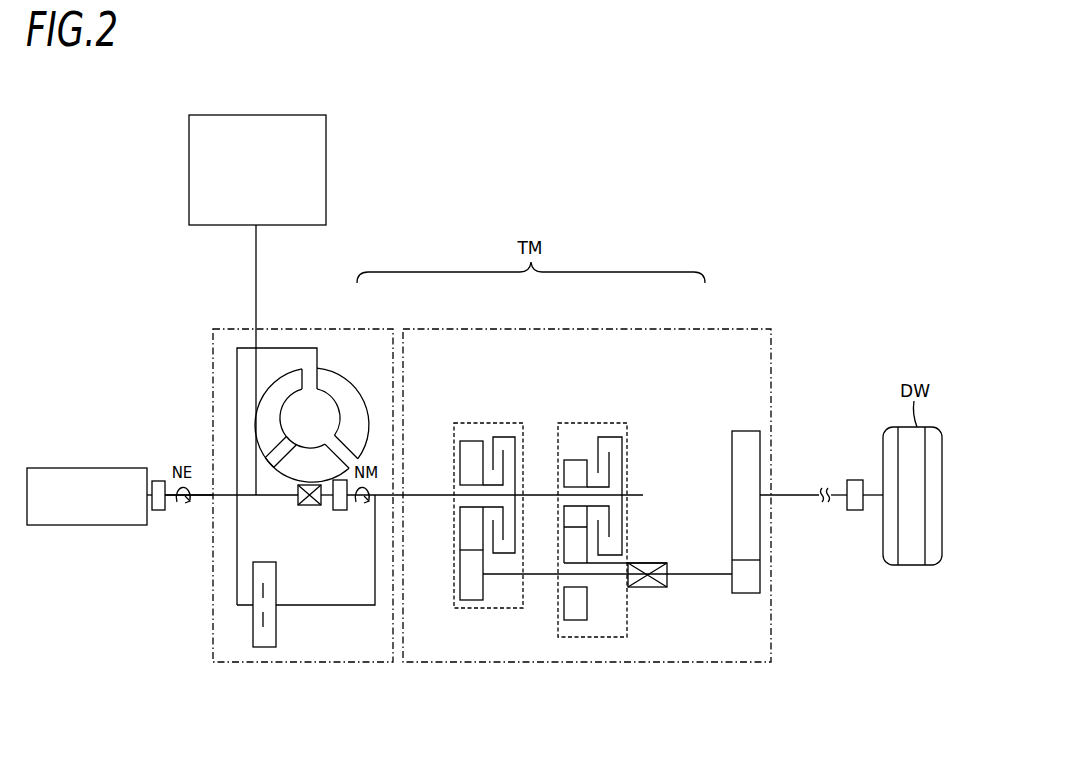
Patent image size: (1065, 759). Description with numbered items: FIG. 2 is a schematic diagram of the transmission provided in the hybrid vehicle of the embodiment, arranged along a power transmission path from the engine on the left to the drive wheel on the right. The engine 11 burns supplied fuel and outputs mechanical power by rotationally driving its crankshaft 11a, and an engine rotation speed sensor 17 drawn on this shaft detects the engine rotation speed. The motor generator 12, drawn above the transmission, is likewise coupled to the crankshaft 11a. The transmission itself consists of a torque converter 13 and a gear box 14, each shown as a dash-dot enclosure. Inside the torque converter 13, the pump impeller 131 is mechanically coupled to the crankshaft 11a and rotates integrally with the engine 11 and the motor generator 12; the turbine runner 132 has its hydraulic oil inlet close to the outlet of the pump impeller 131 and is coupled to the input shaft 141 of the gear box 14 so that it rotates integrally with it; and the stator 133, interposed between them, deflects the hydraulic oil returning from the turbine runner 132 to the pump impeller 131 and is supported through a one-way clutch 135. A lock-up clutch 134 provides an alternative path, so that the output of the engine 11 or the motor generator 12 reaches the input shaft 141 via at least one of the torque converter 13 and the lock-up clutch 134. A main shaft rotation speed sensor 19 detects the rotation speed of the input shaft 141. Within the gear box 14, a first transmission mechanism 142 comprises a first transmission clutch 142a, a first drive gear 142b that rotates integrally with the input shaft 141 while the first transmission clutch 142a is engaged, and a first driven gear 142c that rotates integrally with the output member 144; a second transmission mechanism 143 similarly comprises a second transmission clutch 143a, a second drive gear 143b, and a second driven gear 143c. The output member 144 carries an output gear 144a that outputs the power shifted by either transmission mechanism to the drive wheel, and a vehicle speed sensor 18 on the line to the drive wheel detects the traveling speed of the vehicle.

The engine 11 is at (107, 468).
The crankshaft 11a is at (205, 499).
The motor generator 12 is at (286, 115).
The torque converter 13 is at (384, 329).
The gear box 14 is at (700, 329).
The engine rotation speed sensor 17 is at (160, 481).
The vehicle speed sensor 18 is at (856, 480).
The main shaft rotation speed sensor 19 is at (341, 510).
The pump impeller 131 is at (335, 383).
The turbine runner 132 is at (270, 393).
The stator 133 is at (314, 441).
The lock-up clutch 134 is at (276, 640).
The one-way clutch 135 is at (298, 493).
The input shaft 141 is at (419, 493).
The first transmission mechanism 142 is at (601, 521).
The first transmission clutch 142a is at (610, 437).
The first drive gear 142b is at (573, 460).
The first driven gear 142c is at (564, 607).
The second transmission mechanism 143 is at (472, 510).
The second transmission clutch 143a is at (505, 437).
The second drive gear 143b is at (460, 540).
The second driven gear 143c is at (468, 600).
The output member 144 is at (679, 576).
The output gear 144a is at (738, 593).